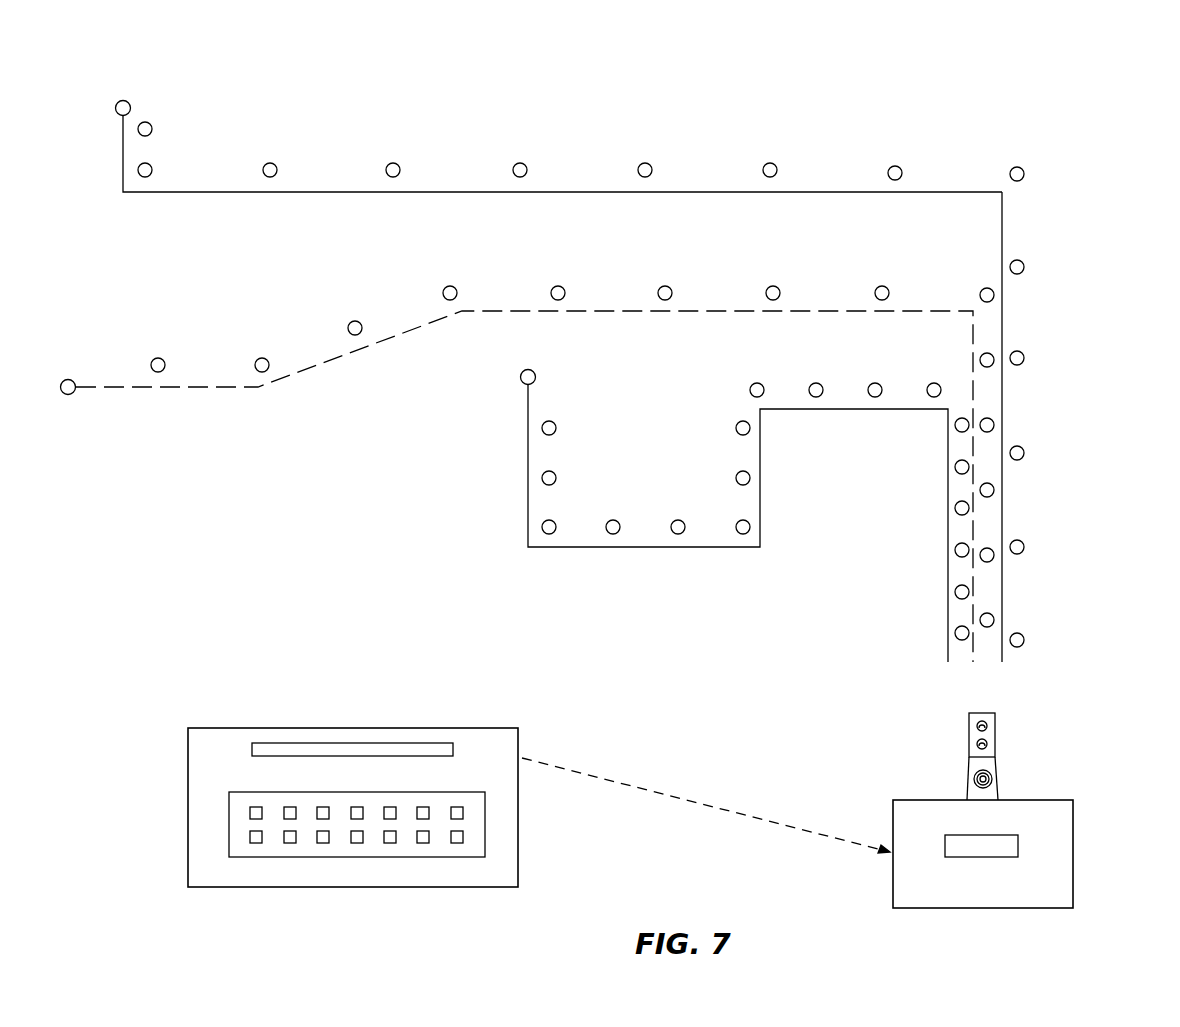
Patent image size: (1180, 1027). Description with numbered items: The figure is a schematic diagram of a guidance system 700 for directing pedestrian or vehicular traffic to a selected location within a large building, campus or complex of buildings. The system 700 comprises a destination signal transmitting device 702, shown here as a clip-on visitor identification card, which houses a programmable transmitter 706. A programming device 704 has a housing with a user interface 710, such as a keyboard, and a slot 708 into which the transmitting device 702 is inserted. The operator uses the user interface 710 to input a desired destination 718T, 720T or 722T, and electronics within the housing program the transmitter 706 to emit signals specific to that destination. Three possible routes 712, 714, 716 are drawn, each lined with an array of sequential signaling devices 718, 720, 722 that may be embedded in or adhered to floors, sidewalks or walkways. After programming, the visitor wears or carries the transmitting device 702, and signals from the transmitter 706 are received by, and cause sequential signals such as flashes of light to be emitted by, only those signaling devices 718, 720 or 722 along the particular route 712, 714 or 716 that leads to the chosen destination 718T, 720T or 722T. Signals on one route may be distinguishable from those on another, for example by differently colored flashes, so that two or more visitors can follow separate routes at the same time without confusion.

The system 700 is at (703, 134).
The destination signal transmitting device 702 is at (1030, 800).
The programming device 704 is at (352, 728).
The programmable transmitter 706 is at (1005, 845).
The slot 708 is at (428, 750).
The user interface 710 is at (474, 850).
The possible route 712 is at (1002, 411).
The possible route 714 is at (841, 311).
The possible route 716 is at (791, 411).
The sequential signaling devices 718 is at (898, 166).
The desired destination 718T is at (124, 100).
The sequential signaling devices 720 is at (665, 286).
The desired destination 720T is at (70, 379).
The sequential signaling devices 722 is at (678, 519).
The desired destination 722T is at (520, 378).